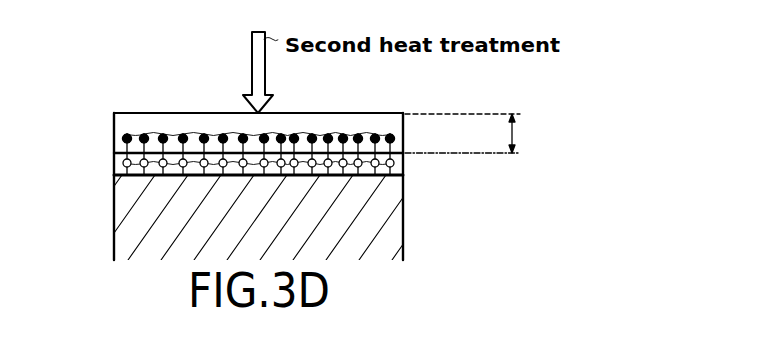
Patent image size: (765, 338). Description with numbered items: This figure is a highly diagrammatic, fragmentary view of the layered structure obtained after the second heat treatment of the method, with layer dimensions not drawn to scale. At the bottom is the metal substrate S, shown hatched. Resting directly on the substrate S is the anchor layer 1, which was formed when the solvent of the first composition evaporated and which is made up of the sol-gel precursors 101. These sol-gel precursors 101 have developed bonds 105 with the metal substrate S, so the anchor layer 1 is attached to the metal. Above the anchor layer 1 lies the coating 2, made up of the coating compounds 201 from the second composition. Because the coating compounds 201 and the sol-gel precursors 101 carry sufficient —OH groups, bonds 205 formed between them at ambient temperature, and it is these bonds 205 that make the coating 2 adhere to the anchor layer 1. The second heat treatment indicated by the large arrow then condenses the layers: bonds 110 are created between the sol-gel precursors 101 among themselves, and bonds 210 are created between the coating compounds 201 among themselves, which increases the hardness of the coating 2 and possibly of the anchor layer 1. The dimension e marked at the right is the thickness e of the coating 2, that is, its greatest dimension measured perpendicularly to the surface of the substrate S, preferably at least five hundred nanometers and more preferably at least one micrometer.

The coating 2 is at (404, 113).
The anchor layer 1 is at (404, 165).
The bonds 205 is at (321, 143).
The coating compounds 201 is at (184, 130).
The bonds 210 is at (241, 138).
The sol-gel precursors 101 is at (228, 183).
The bonds 110 is at (256, 176).
The bonds 105 is at (406, 170).
The metal substrate S is at (114, 217).
The thickness e is at (469, 133).